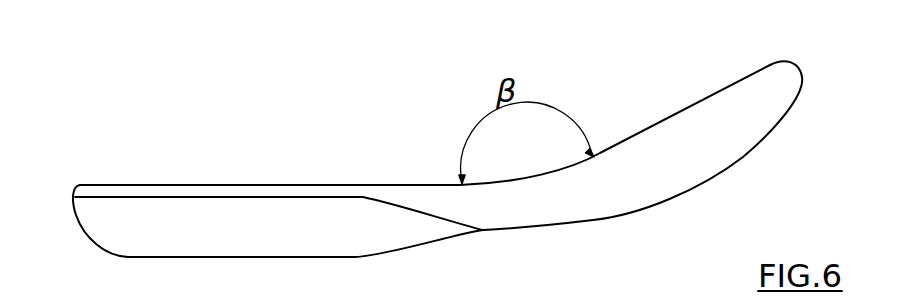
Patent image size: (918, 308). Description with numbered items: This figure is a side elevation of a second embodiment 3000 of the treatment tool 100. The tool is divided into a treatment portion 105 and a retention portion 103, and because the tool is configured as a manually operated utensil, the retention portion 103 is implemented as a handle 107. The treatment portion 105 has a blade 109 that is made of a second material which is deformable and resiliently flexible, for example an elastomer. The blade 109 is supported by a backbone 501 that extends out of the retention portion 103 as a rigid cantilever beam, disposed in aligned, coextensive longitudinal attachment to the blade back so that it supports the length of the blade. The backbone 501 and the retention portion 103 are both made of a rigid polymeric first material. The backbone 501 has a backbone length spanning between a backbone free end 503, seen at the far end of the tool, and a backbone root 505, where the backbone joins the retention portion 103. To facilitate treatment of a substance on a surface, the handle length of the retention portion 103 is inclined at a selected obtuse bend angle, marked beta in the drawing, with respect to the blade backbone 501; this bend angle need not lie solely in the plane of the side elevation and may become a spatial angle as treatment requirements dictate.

The second embodiment 3000 is at (420, 155).
The treatment tool 100 is at (420, 155).
The retention portion 103 is at (631, 123).
The treatment portion 105 is at (249, 181).
The handle 107 is at (763, 82).
The blade 109 is at (121, 245).
The backbone 501 is at (213, 190).
The backbone free end 503 is at (90, 190).
The backbone root 505 is at (405, 197).